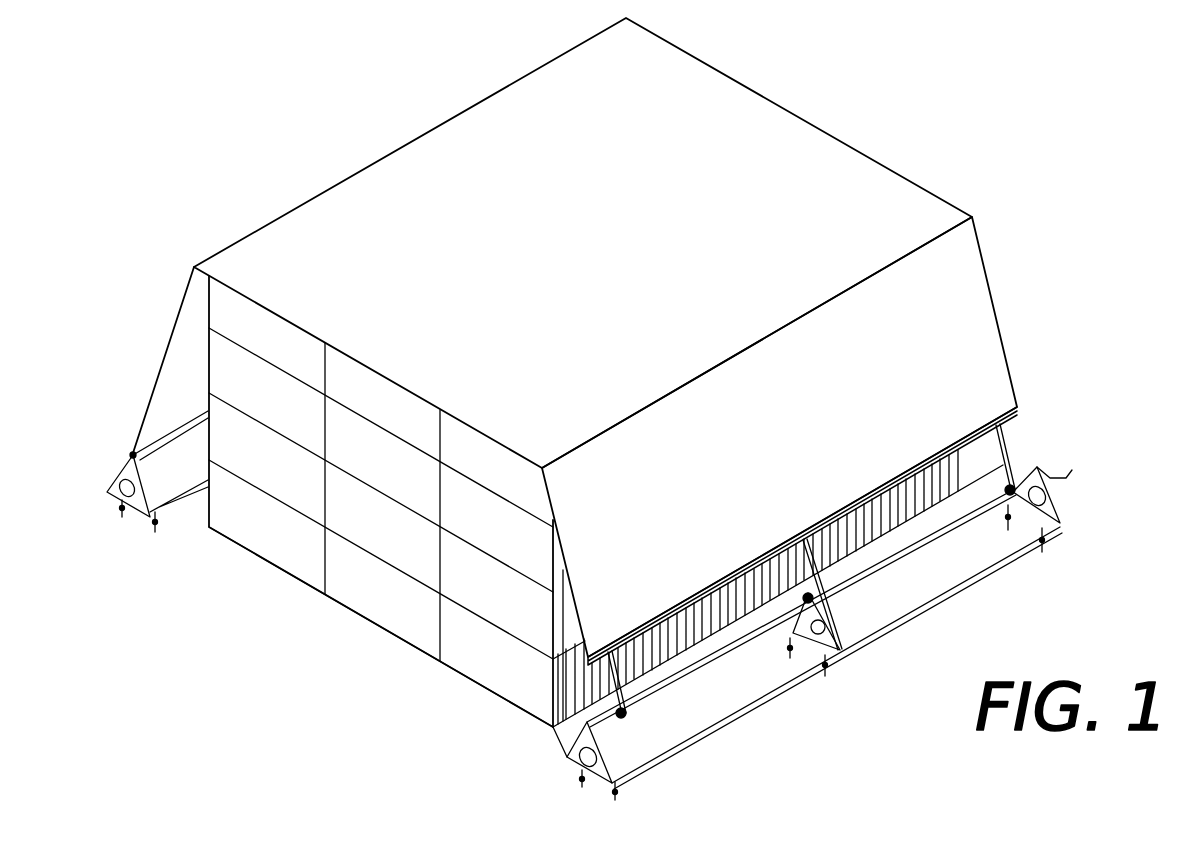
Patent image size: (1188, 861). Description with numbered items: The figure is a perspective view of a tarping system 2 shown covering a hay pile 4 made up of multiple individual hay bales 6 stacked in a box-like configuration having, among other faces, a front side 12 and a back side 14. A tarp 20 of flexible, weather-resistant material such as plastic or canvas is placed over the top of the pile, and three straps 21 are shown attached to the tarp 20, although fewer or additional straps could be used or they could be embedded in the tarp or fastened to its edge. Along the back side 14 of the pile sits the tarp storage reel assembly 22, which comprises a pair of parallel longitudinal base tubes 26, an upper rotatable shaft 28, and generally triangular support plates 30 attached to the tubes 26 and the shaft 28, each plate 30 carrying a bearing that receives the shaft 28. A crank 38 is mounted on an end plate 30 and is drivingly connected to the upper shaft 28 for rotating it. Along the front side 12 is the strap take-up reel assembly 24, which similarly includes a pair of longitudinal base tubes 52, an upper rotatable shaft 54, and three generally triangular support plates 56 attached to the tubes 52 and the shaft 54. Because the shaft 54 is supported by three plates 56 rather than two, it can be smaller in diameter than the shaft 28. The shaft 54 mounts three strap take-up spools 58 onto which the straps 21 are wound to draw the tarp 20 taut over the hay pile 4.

The tarping system 2 is at (958, 160).
The hay pile 4 is at (209, 527).
The hay bales 6 is at (390, 538).
The front side 12 is at (553, 685).
The back side 14 is at (209, 358).
The tarp 20 is at (589, 232).
The straps 21 is at (1008, 447).
The tarp storage reel assembly 22 is at (130, 455).
The strap take-up reel assembly 24 is at (567, 757).
The longitudinal base tubes 26 is at (208, 482).
The upper rotatable shaft 28 is at (133, 452).
The support plates 30 is at (107, 490).
The crank 38 is at (1072, 470).
The longitudinal base tubes 52 is at (1000, 553).
The upper rotatable shaft 54 is at (700, 665).
The support plates 56 is at (613, 787).
The strap take-up spools 58 is at (628, 718).